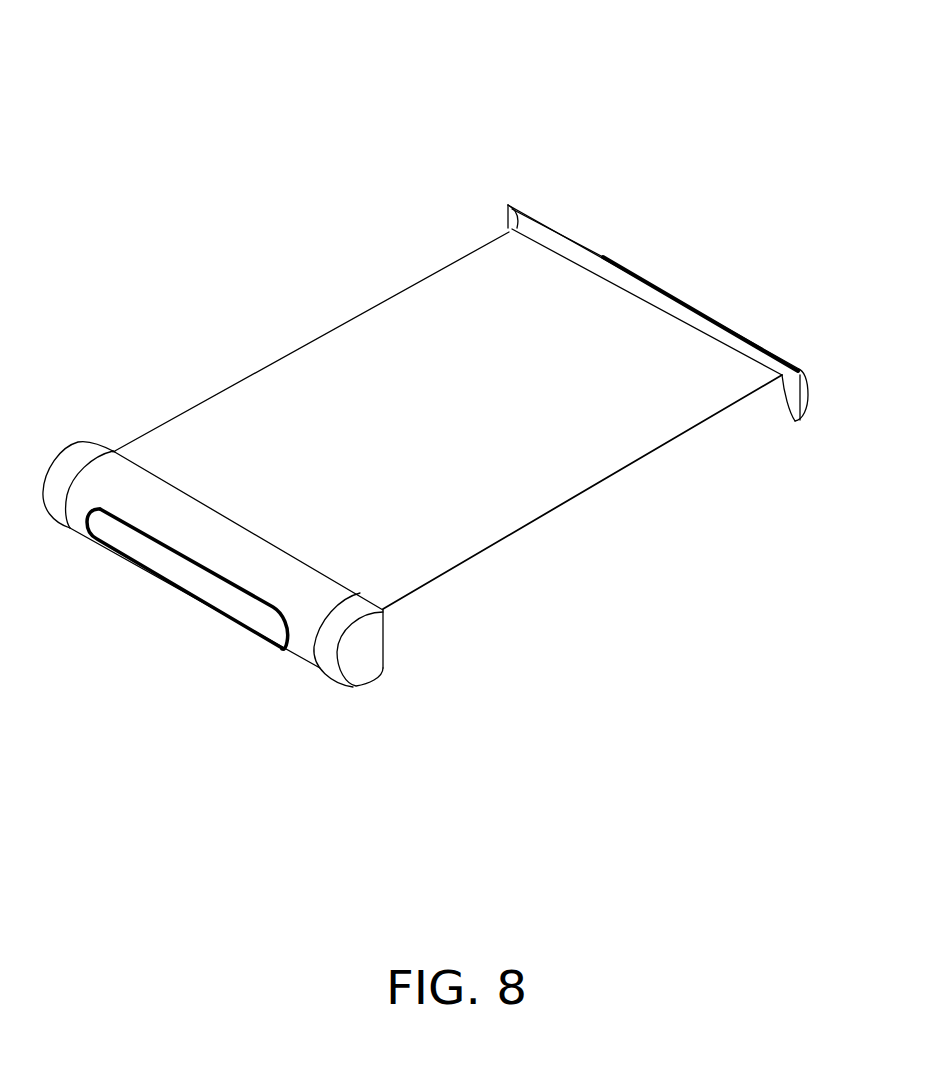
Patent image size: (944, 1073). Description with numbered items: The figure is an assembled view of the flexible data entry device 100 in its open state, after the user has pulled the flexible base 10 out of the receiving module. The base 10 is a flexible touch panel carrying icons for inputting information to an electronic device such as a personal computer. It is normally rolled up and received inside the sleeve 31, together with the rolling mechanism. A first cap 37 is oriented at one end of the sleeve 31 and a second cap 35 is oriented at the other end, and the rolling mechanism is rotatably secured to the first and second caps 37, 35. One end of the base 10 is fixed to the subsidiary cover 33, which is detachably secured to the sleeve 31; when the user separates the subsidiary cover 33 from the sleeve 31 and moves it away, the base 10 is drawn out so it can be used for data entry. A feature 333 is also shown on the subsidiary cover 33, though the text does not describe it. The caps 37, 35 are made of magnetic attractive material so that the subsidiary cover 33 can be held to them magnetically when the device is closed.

The flexible data entry device 100 is at (495, 56).
The flexible base 10 is at (478, 260).
The sleeve 31 is at (303, 642).
The subsidiary cover 33 is at (675, 331).
The groove of pull bar 333 is at (651, 285).
The second cap 35 is at (368, 645).
The first cap 37 is at (91, 446).